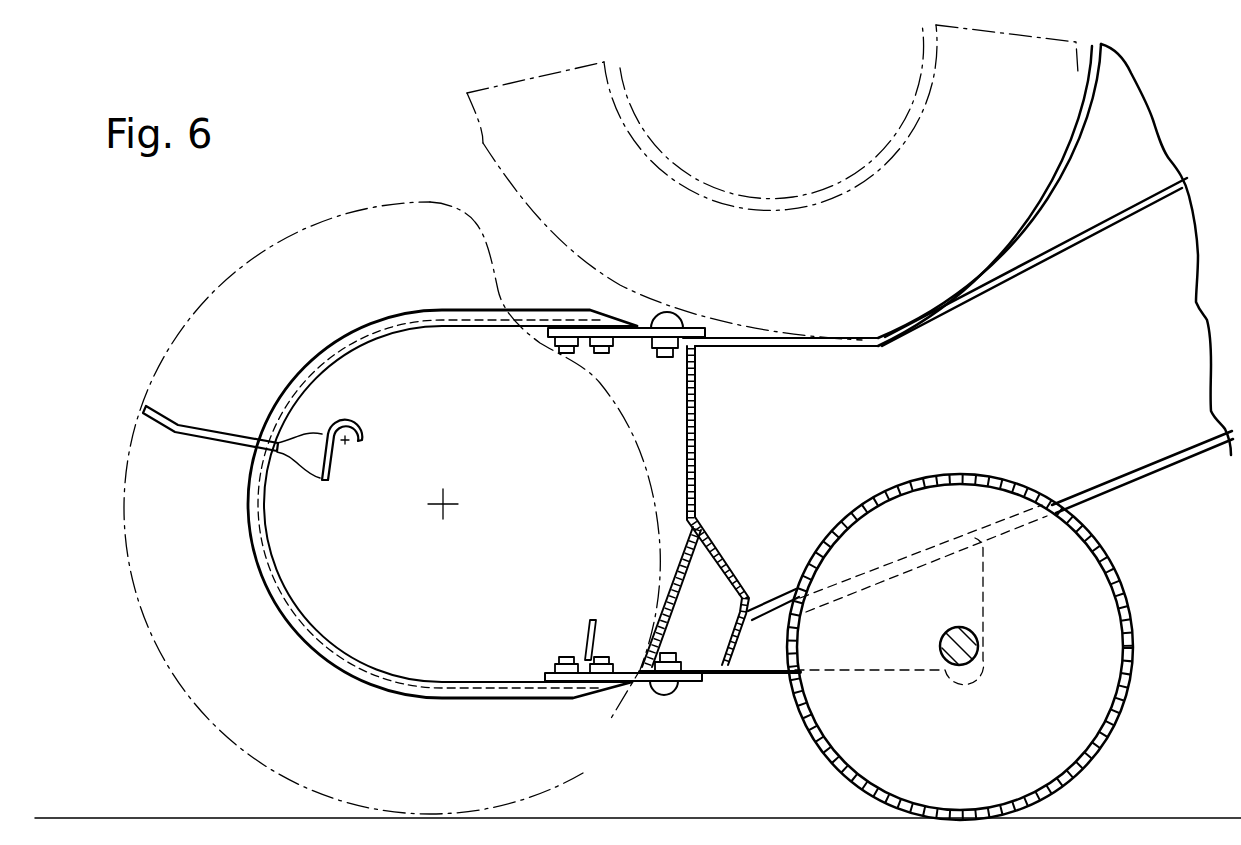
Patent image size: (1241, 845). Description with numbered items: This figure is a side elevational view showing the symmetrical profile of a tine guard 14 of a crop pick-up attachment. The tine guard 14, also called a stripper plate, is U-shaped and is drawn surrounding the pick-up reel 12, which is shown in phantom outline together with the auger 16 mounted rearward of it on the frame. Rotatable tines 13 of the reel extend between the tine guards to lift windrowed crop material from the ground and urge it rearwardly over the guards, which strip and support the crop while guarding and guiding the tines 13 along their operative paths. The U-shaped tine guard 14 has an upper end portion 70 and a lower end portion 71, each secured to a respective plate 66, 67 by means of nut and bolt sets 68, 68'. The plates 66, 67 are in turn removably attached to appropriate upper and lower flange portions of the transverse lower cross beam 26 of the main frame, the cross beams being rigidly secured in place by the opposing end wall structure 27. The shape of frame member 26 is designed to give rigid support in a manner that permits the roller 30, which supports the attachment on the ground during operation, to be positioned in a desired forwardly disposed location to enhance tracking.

The pick-up reel 12 is at (166, 304).
The tines 13 is at (203, 436).
The tine guard 14 is at (358, 320).
The auger 16 is at (483, 143).
The transverse lower cross beam 26 is at (726, 575).
The end wall structure 27 is at (841, 435).
The roller 30 is at (1134, 650).
The plate 66 is at (622, 345).
The plate 67 is at (637, 683).
The nut and bolt set 68 is at (563, 375).
The nut and bolt set 68' is at (560, 632).
The end portion 70 is at (556, 325).
The end portion 71 is at (582, 690).